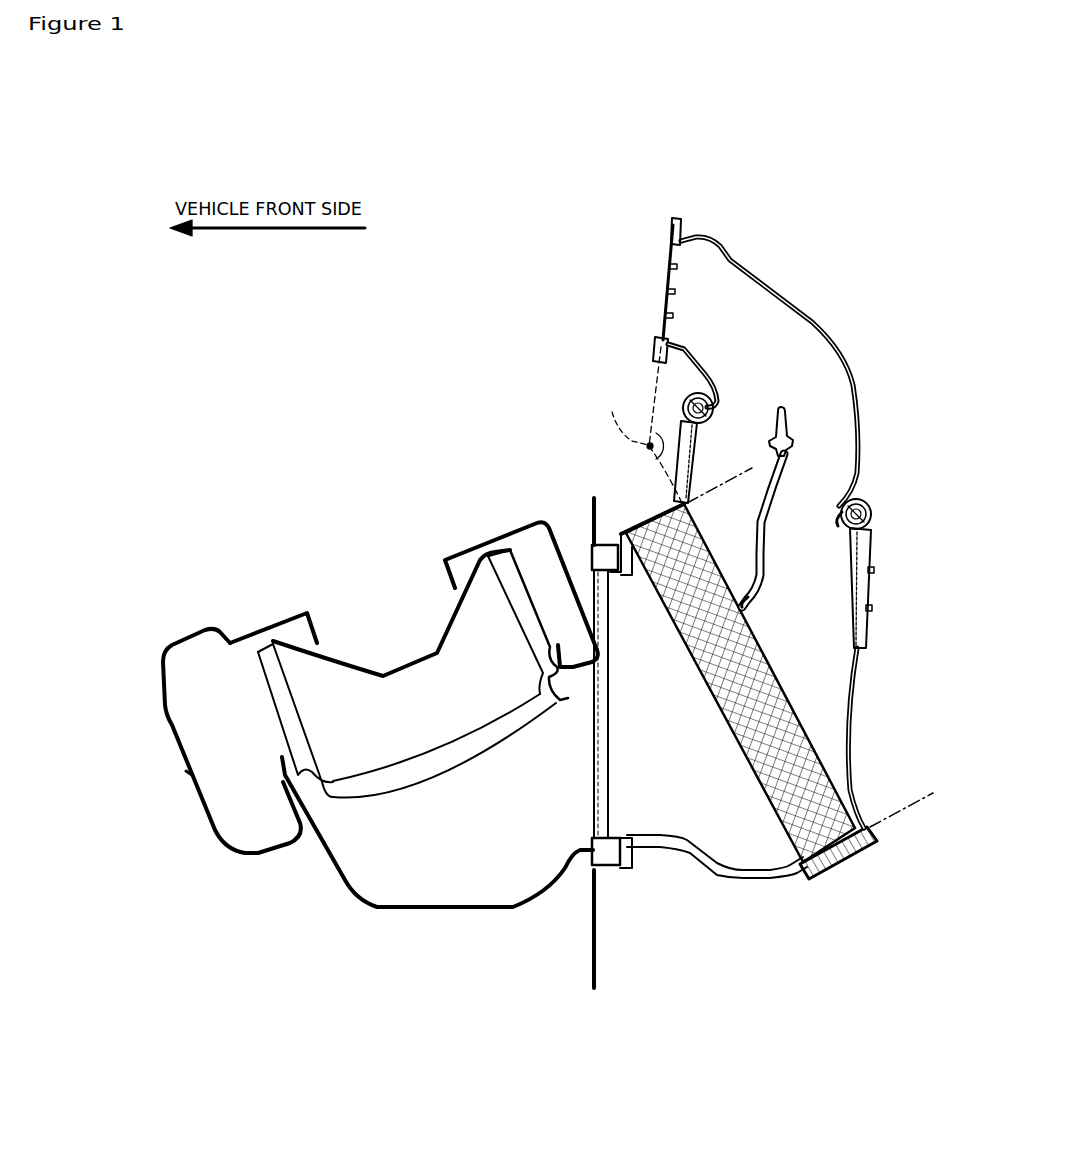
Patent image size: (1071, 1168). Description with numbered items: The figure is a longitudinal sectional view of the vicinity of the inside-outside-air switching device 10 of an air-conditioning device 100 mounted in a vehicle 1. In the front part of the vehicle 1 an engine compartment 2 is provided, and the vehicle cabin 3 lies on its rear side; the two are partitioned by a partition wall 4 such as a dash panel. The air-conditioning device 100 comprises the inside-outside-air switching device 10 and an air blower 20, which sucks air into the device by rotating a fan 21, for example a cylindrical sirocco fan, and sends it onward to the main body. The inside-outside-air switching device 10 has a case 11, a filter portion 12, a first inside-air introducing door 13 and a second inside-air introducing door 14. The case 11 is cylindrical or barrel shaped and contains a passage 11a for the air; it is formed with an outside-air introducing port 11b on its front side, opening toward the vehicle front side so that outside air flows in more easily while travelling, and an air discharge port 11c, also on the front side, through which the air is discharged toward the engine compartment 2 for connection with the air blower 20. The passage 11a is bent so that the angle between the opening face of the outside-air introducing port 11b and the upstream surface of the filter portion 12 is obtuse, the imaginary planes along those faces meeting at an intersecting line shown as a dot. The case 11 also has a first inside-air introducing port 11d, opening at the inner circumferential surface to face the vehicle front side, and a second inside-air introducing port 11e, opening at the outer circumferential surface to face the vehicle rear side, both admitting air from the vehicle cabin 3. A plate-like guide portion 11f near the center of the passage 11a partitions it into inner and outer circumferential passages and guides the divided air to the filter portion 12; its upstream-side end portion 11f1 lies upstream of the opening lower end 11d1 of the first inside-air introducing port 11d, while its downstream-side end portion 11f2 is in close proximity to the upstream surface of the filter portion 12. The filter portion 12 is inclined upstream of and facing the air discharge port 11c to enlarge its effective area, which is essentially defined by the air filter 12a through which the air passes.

The vehicle 1 is at (505, 157).
The air-conditioning device 100 is at (680, 136).
The inside-outside-air switching device 10 is at (804, 228).
The case 11 is at (825, 335).
The passage 11a is at (826, 386).
The outside-air introducing port 11b is at (668, 300).
The air discharge port 11c is at (600, 765).
The first inside-air introducing port 11d is at (678, 463).
The opening lower end 11d1 is at (678, 485).
The second inside-air introducing port 11e is at (872, 595).
The guide portion 11f is at (784, 457).
The upstream-side end portion 11f1 is at (786, 420).
The downstream-side end portion 11f2 is at (747, 603).
The filter portion 12 is at (850, 846).
The air filter 12a is at (768, 725).
The first inside-air introducing door 13 is at (708, 424).
The second inside-air introducing door 14 is at (858, 548).
The air blower 20 is at (355, 525).
The fan 21 is at (488, 617).
The engine compartment 2 is at (461, 965).
The vehicle cabin 3 is at (739, 965).
The partition wall 4 is at (595, 895).